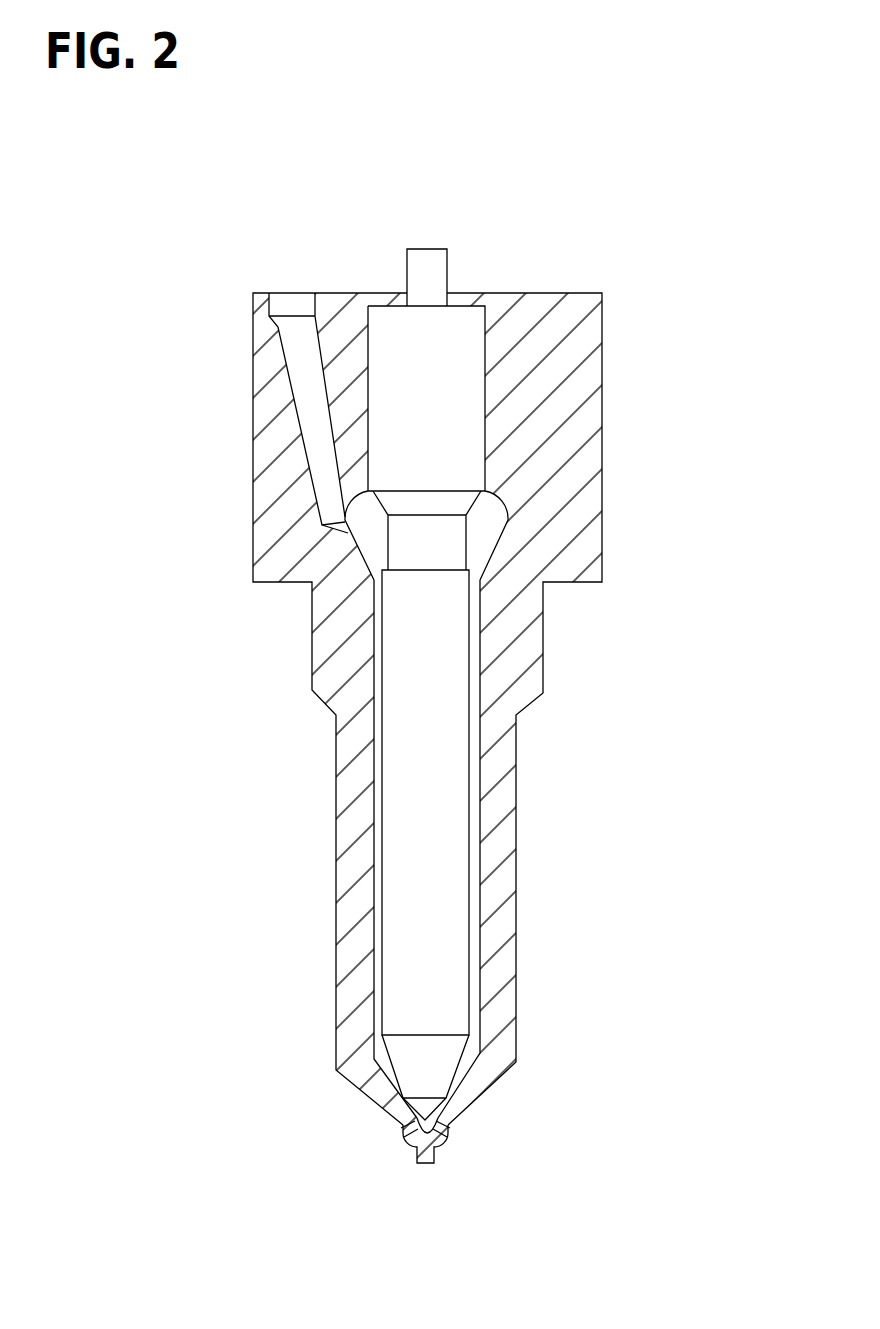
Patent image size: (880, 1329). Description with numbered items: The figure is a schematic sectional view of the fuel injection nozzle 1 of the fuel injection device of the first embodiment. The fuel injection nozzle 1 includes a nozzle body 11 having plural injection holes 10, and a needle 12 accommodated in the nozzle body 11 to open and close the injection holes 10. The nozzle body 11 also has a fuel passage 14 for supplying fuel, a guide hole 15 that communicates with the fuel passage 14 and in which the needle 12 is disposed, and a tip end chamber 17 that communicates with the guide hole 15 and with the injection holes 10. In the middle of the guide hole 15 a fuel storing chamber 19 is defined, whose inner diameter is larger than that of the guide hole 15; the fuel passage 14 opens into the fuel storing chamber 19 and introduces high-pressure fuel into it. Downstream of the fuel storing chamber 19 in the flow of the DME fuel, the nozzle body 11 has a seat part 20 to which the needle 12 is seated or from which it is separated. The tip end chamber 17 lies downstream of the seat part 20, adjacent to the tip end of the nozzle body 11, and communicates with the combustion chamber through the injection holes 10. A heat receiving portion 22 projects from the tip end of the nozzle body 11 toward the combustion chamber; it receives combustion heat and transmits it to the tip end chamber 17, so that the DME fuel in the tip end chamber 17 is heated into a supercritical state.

The fuel injection nozzle 1 is at (689, 232).
The injection holes 10 is at (450, 1130).
The nozzle body 11 is at (502, 787).
The needle 12 is at (445, 860).
The fuel passage 14 is at (315, 385).
The guide hole 15 is at (375, 776).
The tip end chamber 17 is at (410, 1147).
The fuel storing chamber 19 is at (488, 527).
The seat part 20 is at (448, 1098).
The heat receiving portion 22 is at (428, 1165).